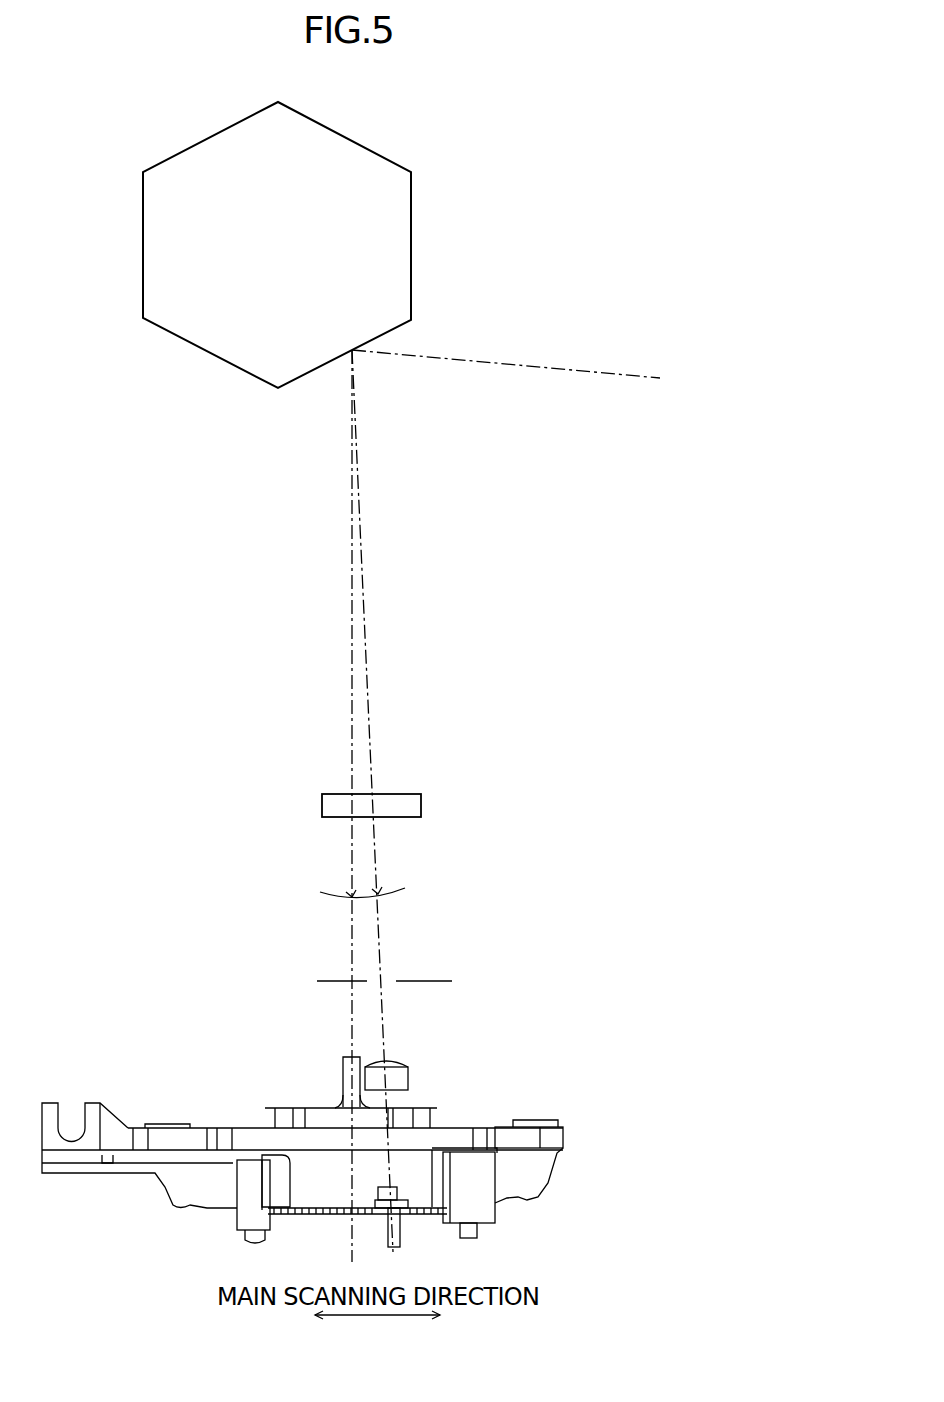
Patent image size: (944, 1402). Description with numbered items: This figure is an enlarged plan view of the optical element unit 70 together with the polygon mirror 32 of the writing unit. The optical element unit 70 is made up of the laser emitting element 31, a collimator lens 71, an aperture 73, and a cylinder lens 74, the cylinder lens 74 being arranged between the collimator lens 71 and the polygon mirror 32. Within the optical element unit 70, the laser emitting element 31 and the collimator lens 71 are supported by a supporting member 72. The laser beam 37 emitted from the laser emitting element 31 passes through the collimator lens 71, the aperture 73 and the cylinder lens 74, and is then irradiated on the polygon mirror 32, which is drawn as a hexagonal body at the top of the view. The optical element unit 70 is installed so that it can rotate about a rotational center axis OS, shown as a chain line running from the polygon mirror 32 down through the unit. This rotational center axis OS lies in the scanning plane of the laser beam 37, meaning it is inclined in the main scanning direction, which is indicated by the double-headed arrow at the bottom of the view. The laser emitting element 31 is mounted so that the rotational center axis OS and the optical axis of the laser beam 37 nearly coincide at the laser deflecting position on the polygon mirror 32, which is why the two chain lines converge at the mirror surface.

The polygon mirror 32 is at (411, 240).
The rotational center axis OS is at (350, 718).
The laser beam 37 is at (367, 706).
The cylinder lens 74 is at (421, 806).
The aperture 73 is at (428, 981).
The collimator lens 71 is at (408, 1075).
The optical element unit 70 is at (557, 1178).
The supporting member 72 is at (537, 1197).
The laser emitting element 31 is at (395, 1187).